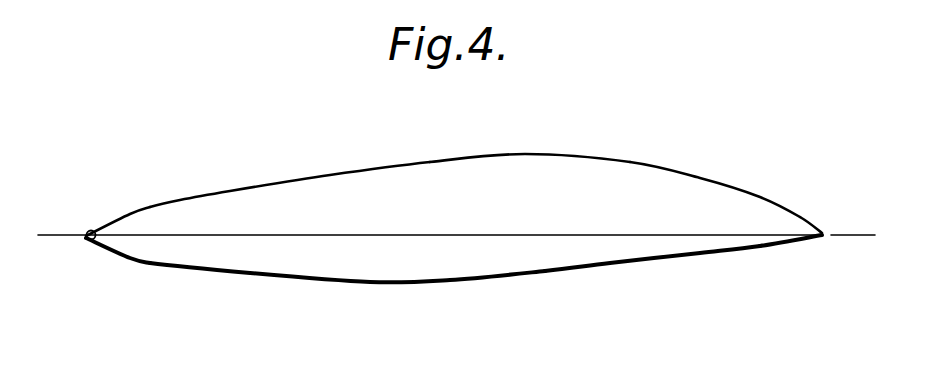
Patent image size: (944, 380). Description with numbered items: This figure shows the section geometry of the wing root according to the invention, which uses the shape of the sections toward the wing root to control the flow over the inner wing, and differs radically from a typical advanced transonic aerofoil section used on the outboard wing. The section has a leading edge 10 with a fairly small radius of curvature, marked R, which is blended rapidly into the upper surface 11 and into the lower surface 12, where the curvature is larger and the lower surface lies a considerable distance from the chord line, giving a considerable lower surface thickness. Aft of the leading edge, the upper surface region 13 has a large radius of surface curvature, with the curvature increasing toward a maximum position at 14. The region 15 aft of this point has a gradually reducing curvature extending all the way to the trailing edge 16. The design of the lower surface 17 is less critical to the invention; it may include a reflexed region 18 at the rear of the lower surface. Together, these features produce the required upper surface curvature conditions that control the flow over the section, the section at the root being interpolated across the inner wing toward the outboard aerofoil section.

The leading edge 10 is at (88, 239).
The upper surface 11 is at (142, 203).
The lower surface 12 is at (136, 263).
The upper surface region aft of the leading edge 13 is at (518, 145).
The maximum position 14 is at (527, 152).
The region aft of the maximum position 15 is at (818, 210).
The trailing edge 16 is at (807, 239).
The lower surface 17 is at (545, 288).
The reflexed region 18 is at (820, 250).